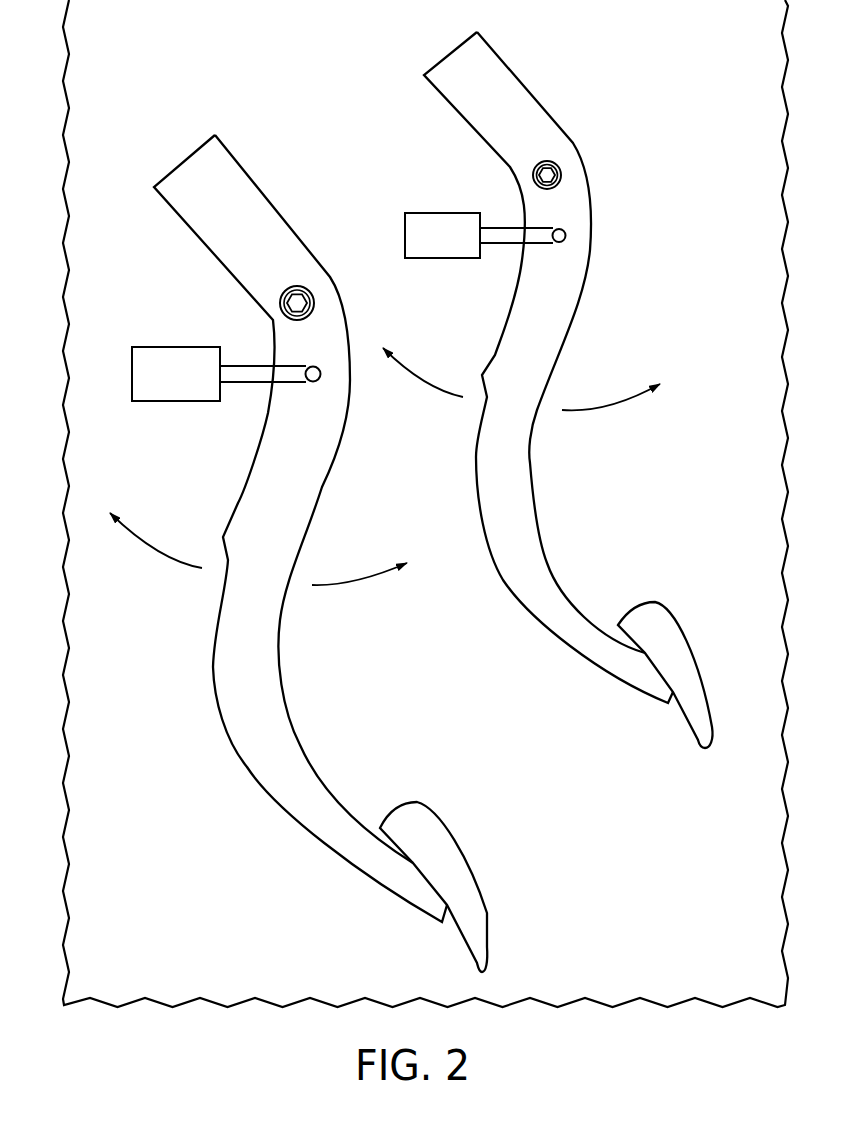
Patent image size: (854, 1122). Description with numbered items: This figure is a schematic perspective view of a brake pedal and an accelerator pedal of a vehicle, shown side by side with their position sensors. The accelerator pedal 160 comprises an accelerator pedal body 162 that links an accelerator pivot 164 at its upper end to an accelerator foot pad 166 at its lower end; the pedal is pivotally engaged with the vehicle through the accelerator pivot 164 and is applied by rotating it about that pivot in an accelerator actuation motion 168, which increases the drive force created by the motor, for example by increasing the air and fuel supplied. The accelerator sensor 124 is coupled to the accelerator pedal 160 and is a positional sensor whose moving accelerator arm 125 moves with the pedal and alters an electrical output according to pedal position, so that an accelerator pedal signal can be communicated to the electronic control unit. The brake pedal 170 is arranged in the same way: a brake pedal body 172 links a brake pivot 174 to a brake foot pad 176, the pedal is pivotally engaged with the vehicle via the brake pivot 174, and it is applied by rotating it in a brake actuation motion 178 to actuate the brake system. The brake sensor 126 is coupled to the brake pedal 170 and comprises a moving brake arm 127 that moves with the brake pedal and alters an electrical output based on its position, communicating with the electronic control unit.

The accelerator pedal 160 is at (575, 386).
The accelerator pedal body 162 is at (580, 298).
The accelerator pivot 164 is at (561, 175).
The accelerator foot pad 166 is at (698, 657).
The accelerator actuation motion 168 is at (423, 380).
The brake pedal 170 is at (325, 530).
The brake pedal body 172 is at (330, 462).
The brake pivot 174 is at (314, 302).
The brake foot pad 176 is at (470, 860).
The brake actuation motion 178 is at (157, 550).
The accelerator sensor 124 is at (443, 213).
The moving accelerator arm 125 is at (510, 245).
The brake sensor 126 is at (173, 347).
The moving brake arm 127 is at (255, 383).